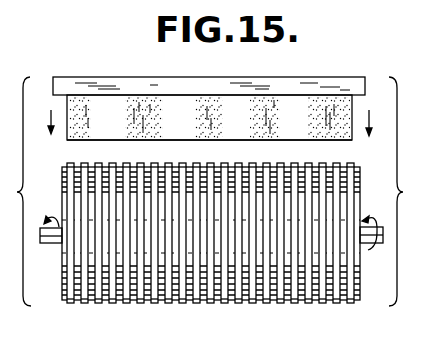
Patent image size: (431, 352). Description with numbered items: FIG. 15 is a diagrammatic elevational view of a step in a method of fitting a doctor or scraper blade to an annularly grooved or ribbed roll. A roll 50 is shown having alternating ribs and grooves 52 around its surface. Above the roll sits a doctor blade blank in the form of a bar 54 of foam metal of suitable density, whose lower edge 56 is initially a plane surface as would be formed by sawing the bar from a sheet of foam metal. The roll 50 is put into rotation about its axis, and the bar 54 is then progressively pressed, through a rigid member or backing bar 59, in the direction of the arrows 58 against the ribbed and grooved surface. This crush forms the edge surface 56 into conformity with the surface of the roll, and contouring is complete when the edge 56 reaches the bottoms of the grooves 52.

The roll 50 is at (211, 257).
The ribs and grooves 52 is at (191, 309).
The bar 54 is at (304, 108).
The lower edge 56 is at (184, 139).
The arrows 58 is at (56, 124).
The backing bar 59 is at (97, 78).